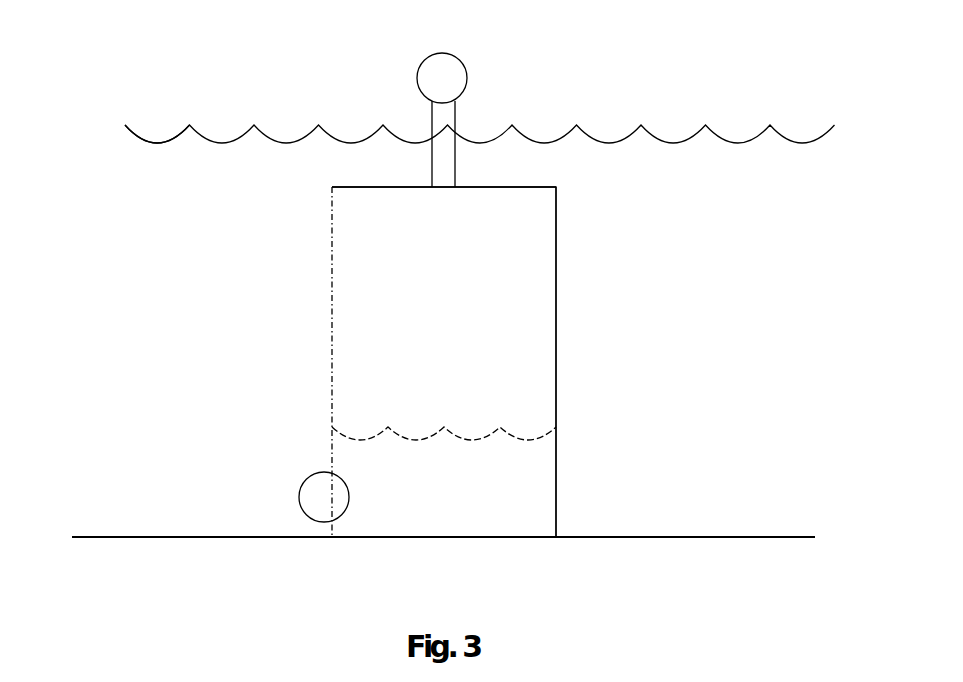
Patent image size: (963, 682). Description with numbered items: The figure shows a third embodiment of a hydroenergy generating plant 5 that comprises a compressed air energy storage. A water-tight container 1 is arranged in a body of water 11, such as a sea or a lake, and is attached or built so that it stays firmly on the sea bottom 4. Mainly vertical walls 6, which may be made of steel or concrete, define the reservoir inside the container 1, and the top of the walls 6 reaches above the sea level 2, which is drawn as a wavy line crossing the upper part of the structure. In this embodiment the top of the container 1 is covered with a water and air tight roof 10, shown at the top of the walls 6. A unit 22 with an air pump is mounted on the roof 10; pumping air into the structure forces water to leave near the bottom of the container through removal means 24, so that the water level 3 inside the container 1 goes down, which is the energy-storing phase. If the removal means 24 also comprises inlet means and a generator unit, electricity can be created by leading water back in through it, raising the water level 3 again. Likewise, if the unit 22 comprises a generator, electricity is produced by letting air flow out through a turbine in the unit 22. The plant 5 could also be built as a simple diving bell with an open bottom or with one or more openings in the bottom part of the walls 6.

The container 1 is at (332, 187).
The sea level 2 is at (142, 142).
The water level 3 is at (392, 430).
The sea bottom 4 is at (98, 535).
The hydroenergy generating plant 5 is at (696, 96).
The walls 6 is at (557, 358).
The roof 10 is at (522, 187).
The body of water 11 is at (183, 344).
The unit with an air pump 22 is at (468, 77).
The removal means 24 is at (299, 495).